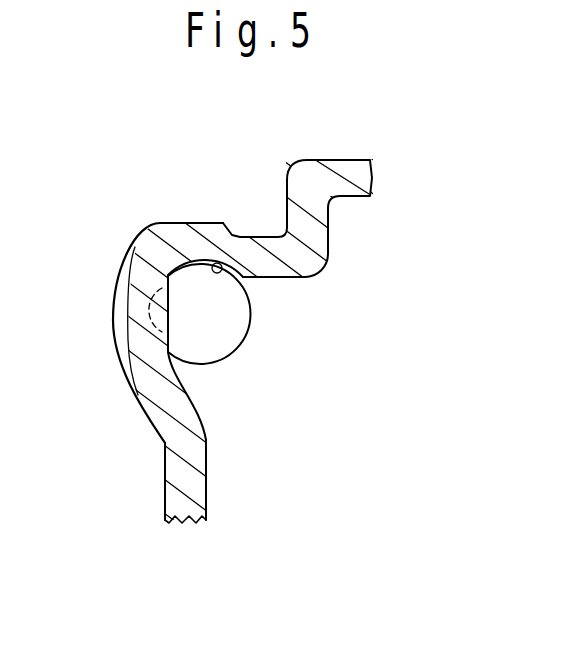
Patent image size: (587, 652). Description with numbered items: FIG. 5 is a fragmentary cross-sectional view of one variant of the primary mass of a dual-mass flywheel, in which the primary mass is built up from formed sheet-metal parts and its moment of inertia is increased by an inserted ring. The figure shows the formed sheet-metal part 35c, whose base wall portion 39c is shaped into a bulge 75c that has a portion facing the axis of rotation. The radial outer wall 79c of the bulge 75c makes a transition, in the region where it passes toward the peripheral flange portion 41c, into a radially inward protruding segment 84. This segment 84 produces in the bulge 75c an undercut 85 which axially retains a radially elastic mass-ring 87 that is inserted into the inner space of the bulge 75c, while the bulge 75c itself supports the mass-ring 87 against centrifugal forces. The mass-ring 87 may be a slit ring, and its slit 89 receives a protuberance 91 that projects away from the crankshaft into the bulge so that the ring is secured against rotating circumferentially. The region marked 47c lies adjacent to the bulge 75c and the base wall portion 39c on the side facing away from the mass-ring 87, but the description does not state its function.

The formed sheet-metal part 35c is at (152, 508).
The base wall portion 39c is at (176, 470).
The peripheral flange portion 41c is at (343, 185).
The recess 47c is at (233, 412).
The bulge 75c is at (106, 316).
The radial outer wall 79c is at (188, 247).
The radially inward protruding segment 84 is at (298, 277).
The undercut 85 is at (218, 262).
The mass-ring 87 is at (245, 343).
The slit 89 is at (217, 321).
The protuberance 91 is at (205, 366).